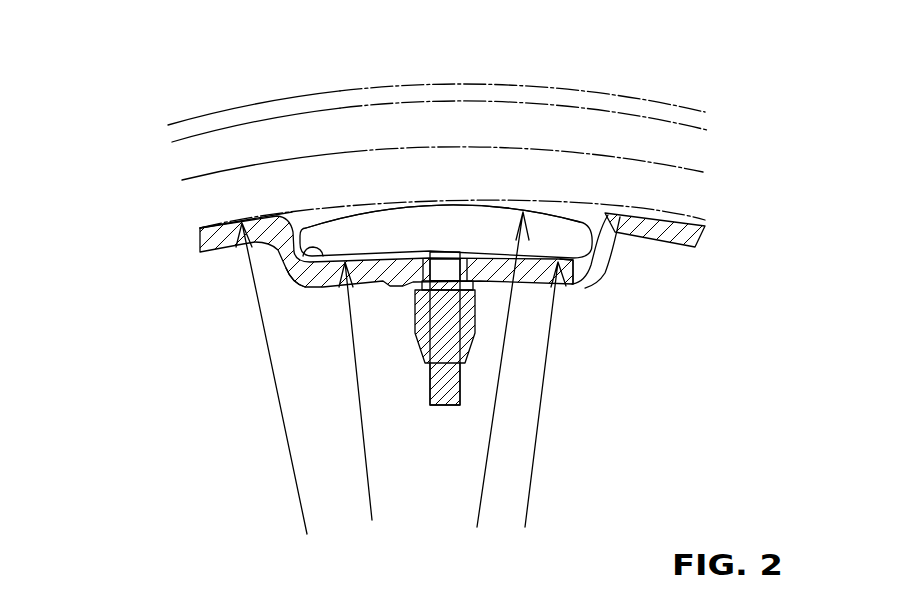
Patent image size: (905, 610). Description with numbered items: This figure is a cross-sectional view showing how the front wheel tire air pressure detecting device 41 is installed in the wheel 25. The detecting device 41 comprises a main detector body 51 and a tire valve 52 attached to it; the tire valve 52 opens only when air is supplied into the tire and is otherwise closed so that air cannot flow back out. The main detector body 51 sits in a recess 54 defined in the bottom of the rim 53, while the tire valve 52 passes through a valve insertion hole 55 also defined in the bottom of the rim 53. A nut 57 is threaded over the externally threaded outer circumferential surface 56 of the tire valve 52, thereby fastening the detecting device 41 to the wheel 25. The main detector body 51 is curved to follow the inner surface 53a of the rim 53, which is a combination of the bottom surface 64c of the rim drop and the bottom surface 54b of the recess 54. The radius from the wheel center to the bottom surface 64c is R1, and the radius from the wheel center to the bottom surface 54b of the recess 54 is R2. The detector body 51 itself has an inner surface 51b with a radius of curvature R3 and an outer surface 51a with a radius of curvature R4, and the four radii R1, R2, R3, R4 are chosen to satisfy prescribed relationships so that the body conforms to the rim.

The wheel 25 is at (248, 82).
The front wheel tire air pressure detecting device 41 is at (454, 176).
The main detector body 51 is at (346, 217).
The outer surface 51a is at (545, 213).
The inner surface 51b is at (575, 283).
The tire valve 52 is at (446, 407).
The rim 53 is at (215, 201).
The inner surface of the rim 53a is at (642, 194).
The recess 54 is at (592, 210).
The bottom surface of the recess 54b is at (292, 289).
The valve insertion hole 55 is at (417, 312).
The externally threaded outer circumferential surface 56 is at (430, 387).
The nut 57 is at (428, 340).
The bottom surface of the rim drop 64c is at (665, 218).
The radius to bottom surface of rim drop R1 is at (270, 378).
The radius to bottom surface of recess R2 is at (341, 391).
The radius of curvature of inner surface R3 is at (552, 394).
The radius of curvature of outer surface R4 is at (484, 369).